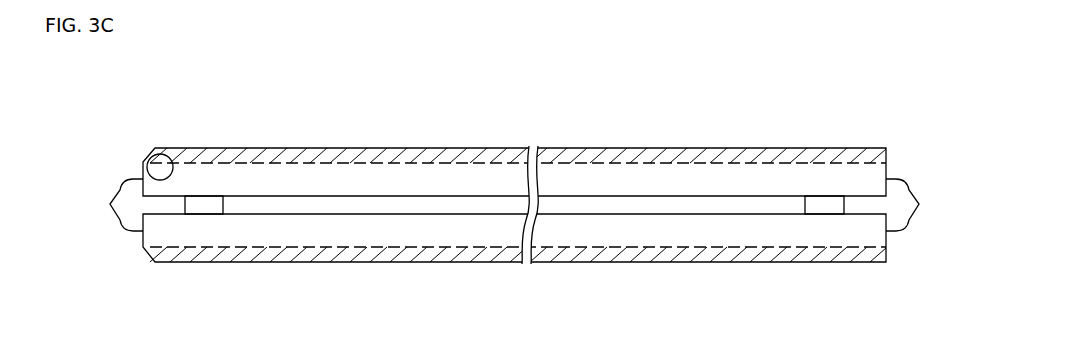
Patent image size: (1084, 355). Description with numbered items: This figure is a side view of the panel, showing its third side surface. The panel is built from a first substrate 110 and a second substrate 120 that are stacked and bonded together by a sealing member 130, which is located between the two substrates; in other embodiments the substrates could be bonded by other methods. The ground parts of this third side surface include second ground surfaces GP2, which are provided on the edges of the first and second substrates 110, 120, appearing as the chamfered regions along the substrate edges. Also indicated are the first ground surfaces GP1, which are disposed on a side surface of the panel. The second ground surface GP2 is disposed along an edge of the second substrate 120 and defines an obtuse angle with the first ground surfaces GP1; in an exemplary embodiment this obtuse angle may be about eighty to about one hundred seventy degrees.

The first substrate 110 is at (574, 262).
The second substrate 120 is at (576, 148).
The sealing member 130 is at (203, 207).
The first ground surface GP1 is at (110, 204).
The second ground surface GP2 is at (148, 149).